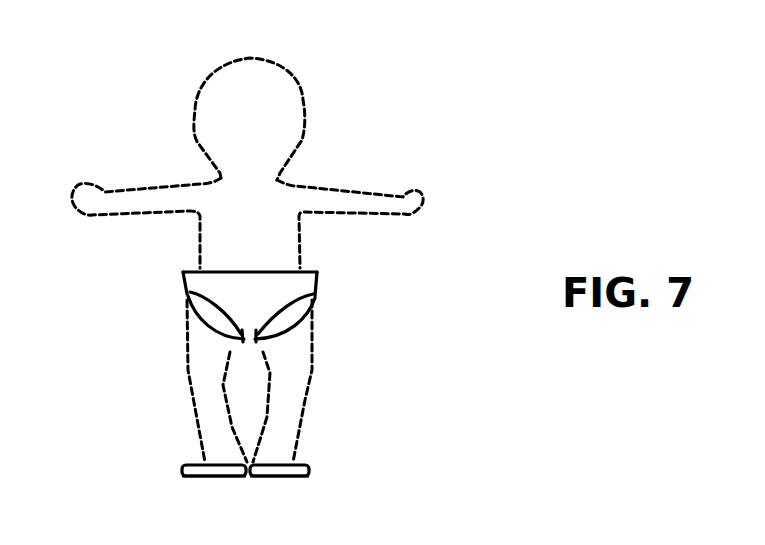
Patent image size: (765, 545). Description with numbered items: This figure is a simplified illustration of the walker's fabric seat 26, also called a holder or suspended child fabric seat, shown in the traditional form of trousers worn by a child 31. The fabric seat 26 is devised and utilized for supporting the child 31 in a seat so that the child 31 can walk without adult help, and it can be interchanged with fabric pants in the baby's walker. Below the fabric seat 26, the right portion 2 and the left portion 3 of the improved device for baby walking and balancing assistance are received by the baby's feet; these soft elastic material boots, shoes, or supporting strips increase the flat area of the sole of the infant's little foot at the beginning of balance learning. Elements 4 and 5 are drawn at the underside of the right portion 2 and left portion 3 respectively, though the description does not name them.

The child 31 is at (317, 83).
The fabric seat 26 is at (238, 283).
The right portion 2 is at (168, 467).
The left portion 3 is at (322, 467).
The sole of first shoe 4 is at (213, 477).
The sole of second shoe 5 is at (275, 477).